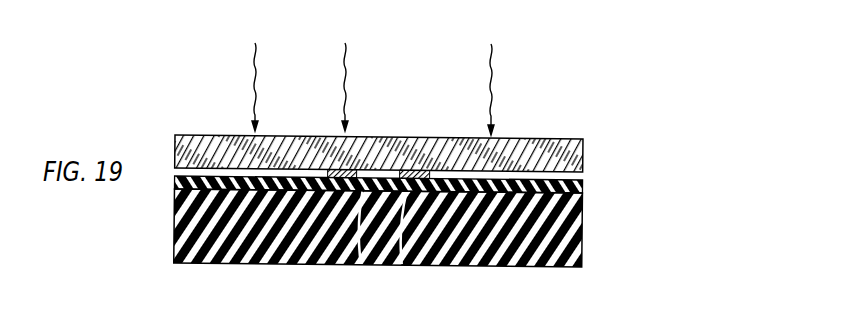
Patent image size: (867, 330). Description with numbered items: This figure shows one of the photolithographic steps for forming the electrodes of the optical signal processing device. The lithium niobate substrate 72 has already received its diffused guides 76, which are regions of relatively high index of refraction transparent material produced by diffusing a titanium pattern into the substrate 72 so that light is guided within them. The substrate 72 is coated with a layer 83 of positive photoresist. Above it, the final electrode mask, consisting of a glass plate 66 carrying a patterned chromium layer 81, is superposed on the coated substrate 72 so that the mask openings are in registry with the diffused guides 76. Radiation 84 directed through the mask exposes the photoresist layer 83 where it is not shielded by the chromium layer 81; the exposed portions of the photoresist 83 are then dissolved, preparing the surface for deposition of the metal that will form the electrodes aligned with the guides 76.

The glass plate 66 is at (583, 138).
The lithium niobate substrate 72 is at (578, 233).
The diffused guides 76 is at (401, 266).
The chromium layer 81 is at (357, 170).
The positive photoresist layer 83 is at (583, 181).
The exposing radiation 84 is at (344, 64).